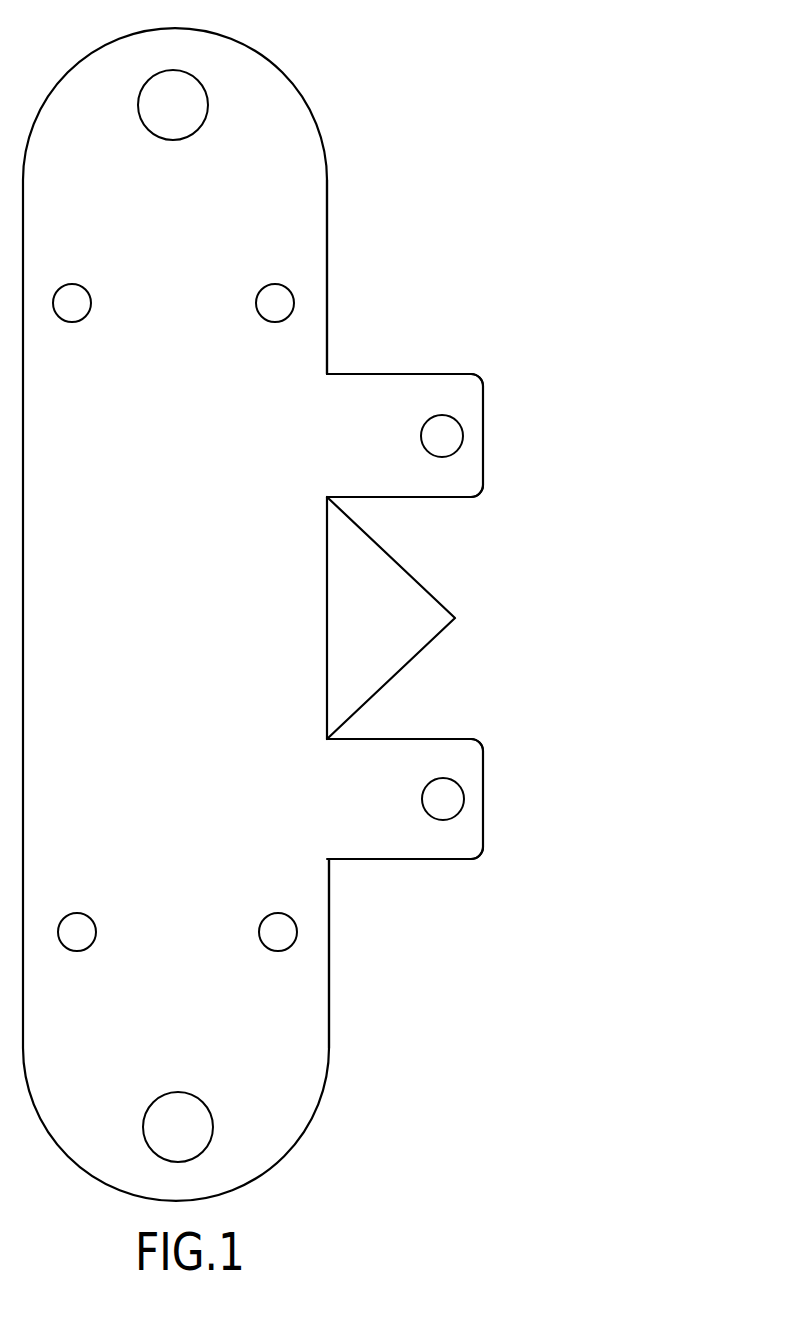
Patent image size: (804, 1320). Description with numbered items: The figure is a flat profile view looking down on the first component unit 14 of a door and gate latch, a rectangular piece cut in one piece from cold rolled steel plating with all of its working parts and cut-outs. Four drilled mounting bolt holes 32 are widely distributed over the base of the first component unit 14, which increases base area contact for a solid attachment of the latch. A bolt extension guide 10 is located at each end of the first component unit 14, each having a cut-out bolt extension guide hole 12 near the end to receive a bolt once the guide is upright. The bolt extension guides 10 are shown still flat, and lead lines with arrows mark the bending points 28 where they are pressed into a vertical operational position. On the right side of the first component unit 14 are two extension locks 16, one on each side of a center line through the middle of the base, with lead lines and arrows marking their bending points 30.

The bolt extension guide 10 is at (232, 33).
The bolt extension guide hole 12 is at (208, 100).
The first component unit 14 is at (329, 303).
The extension lock 16 is at (485, 431).
The bending point 28 is at (315, 201).
The bending point for extension locks 30 is at (455, 618).
The mounting bolt hole 32 is at (292, 931).